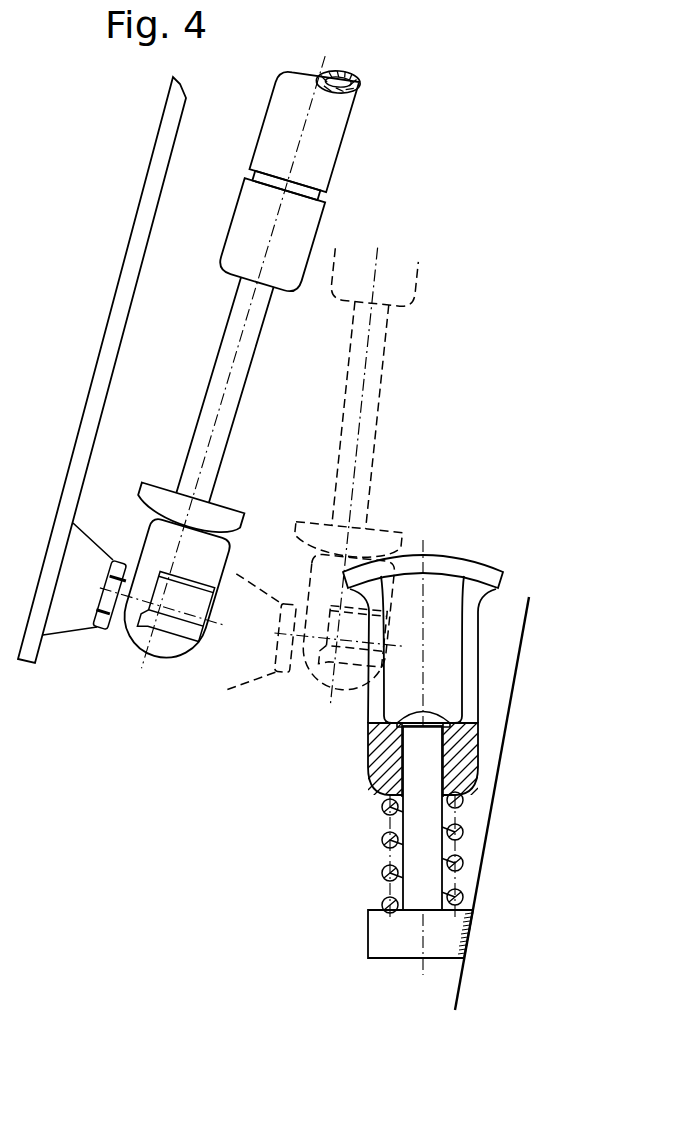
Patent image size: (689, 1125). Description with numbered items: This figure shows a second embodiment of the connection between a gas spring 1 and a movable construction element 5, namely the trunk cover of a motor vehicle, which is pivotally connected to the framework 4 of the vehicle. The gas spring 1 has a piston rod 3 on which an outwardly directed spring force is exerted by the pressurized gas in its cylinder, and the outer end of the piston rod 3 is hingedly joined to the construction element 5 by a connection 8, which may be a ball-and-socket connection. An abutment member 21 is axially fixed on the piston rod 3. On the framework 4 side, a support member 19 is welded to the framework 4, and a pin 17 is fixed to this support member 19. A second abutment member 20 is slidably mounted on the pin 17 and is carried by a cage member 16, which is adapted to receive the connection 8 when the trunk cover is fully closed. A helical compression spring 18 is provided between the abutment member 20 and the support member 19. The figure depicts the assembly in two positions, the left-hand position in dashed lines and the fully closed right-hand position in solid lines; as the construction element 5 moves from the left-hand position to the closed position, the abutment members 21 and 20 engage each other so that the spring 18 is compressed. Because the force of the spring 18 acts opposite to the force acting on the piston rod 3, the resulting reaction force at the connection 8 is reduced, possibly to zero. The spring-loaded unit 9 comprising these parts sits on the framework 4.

The gas spring 1 is at (372, 163).
The piston rod 3 is at (248, 349).
The framework 4 is at (505, 757).
The construction element 5 is at (125, 285).
The connection 8 is at (137, 635).
The detent unit 9 is at (343, 750).
The cage member 16 is at (470, 676).
The pin 17 is at (413, 825).
The helical compression spring 18 is at (383, 878).
The support member 19 is at (393, 943).
The abutment member 20 is at (468, 555).
The abutment member 21 is at (167, 497).